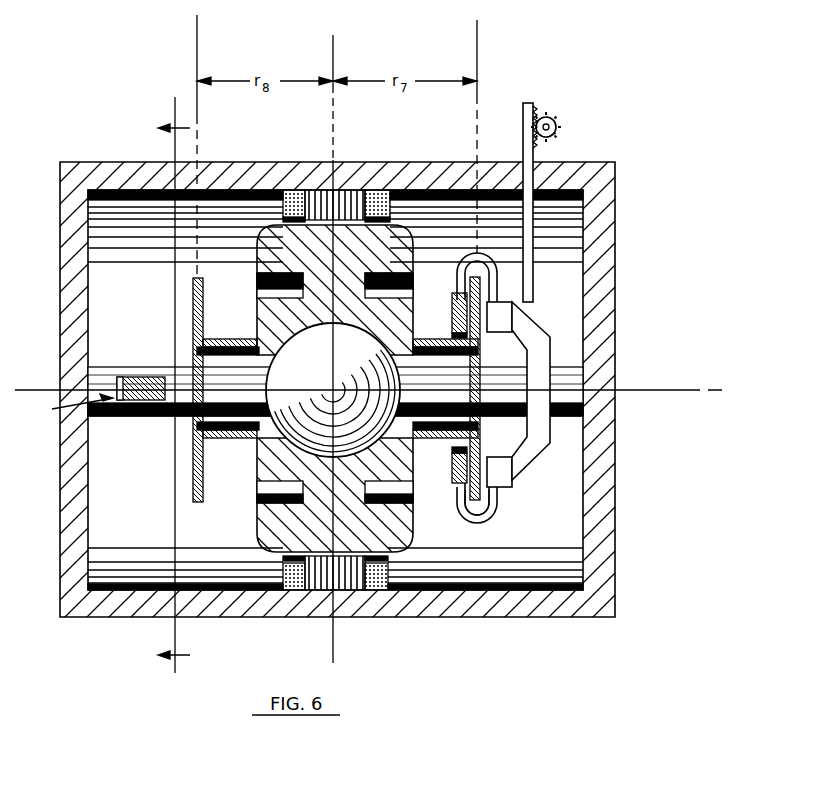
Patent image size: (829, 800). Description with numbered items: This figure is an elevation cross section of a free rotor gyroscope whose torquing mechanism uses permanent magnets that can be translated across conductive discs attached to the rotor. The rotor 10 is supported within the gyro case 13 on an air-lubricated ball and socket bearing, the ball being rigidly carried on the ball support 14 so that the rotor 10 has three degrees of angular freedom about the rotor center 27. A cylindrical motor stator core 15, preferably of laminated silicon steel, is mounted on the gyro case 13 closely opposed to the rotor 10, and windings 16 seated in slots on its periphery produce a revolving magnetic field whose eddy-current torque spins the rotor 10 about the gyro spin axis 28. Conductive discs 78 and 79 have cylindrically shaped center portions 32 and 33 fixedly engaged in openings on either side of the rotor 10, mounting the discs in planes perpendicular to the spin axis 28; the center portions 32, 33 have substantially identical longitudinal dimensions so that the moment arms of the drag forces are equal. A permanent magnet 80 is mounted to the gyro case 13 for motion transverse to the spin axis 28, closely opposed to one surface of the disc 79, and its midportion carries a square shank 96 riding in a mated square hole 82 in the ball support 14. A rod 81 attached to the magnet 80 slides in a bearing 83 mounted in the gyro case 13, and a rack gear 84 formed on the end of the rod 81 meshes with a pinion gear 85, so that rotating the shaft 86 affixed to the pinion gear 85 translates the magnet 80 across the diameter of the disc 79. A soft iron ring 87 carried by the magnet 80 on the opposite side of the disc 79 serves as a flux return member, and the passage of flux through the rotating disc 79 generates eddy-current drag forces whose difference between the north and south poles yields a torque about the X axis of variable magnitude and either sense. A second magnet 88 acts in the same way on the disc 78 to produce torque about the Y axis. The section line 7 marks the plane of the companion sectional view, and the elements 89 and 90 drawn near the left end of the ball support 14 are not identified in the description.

The section line 7- 7 is at (157, 139).
The rotor 10 is at (375, 247).
The gyro case 13 is at (592, 516).
The ball support 14 is at (580, 399).
The motor stator core 15 is at (312, 190).
The windings 16 is at (376, 190).
The rotor center 27 is at (340, 389).
The gyro spin axis 28 is at (645, 390).
The cylindrically shaped center portion 32 is at (237, 443).
The cylindrically shaped center portion 33 is at (442, 444).
The conductive disc 78 is at (193, 485).
The conductive disc 79 is at (502, 497).
The permanent magnet 80 is at (512, 312).
The rod 81 is at (528, 255).
The square hole 82 is at (556, 416).
The bearing 83 is at (552, 178).
The rack gear 84 is at (534, 110).
The pinion gear 85 is at (557, 134).
The shaft 86 is at (556, 121).
The soft iron ring 87 is at (455, 302).
The magnet 88 is at (70, 408).
The bushing 89 is at (138, 377).
The bushing end 90 is at (117, 379).
The square shank 96 is at (540, 356).